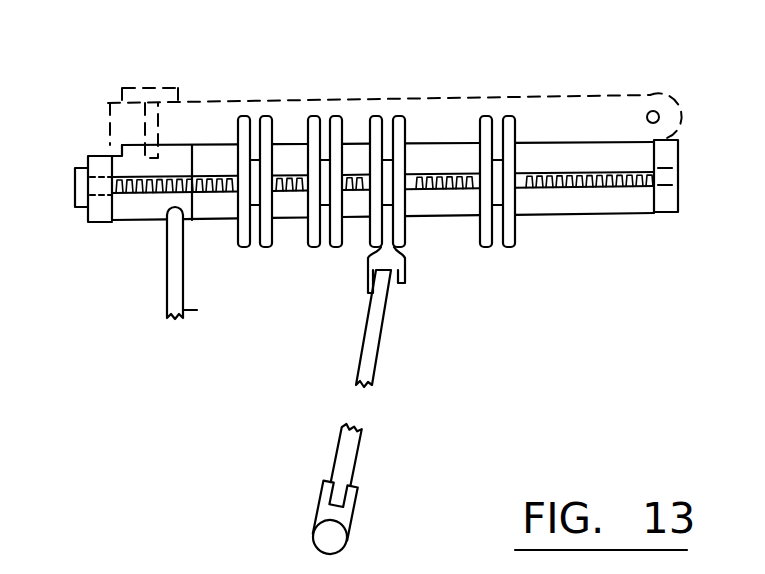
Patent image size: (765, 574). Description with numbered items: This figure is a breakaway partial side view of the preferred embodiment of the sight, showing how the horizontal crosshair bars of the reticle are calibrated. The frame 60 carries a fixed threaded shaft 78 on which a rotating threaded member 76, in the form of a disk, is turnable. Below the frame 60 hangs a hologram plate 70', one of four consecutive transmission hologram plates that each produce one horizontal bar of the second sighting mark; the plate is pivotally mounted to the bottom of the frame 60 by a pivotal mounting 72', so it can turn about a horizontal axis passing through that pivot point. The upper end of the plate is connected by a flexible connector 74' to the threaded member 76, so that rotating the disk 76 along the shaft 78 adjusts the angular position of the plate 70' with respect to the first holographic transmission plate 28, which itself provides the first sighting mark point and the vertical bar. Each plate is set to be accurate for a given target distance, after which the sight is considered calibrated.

The frame 60 is at (583, 110).
The threaded member 76 is at (408, 132).
The threaded shaft 78 is at (623, 186).
The holographic transmission plate 28 is at (173, 260).
The flexible connector 74' is at (422, 317).
The hologram plate 70' is at (392, 454).
The pivotal mounting 72' is at (290, 520).